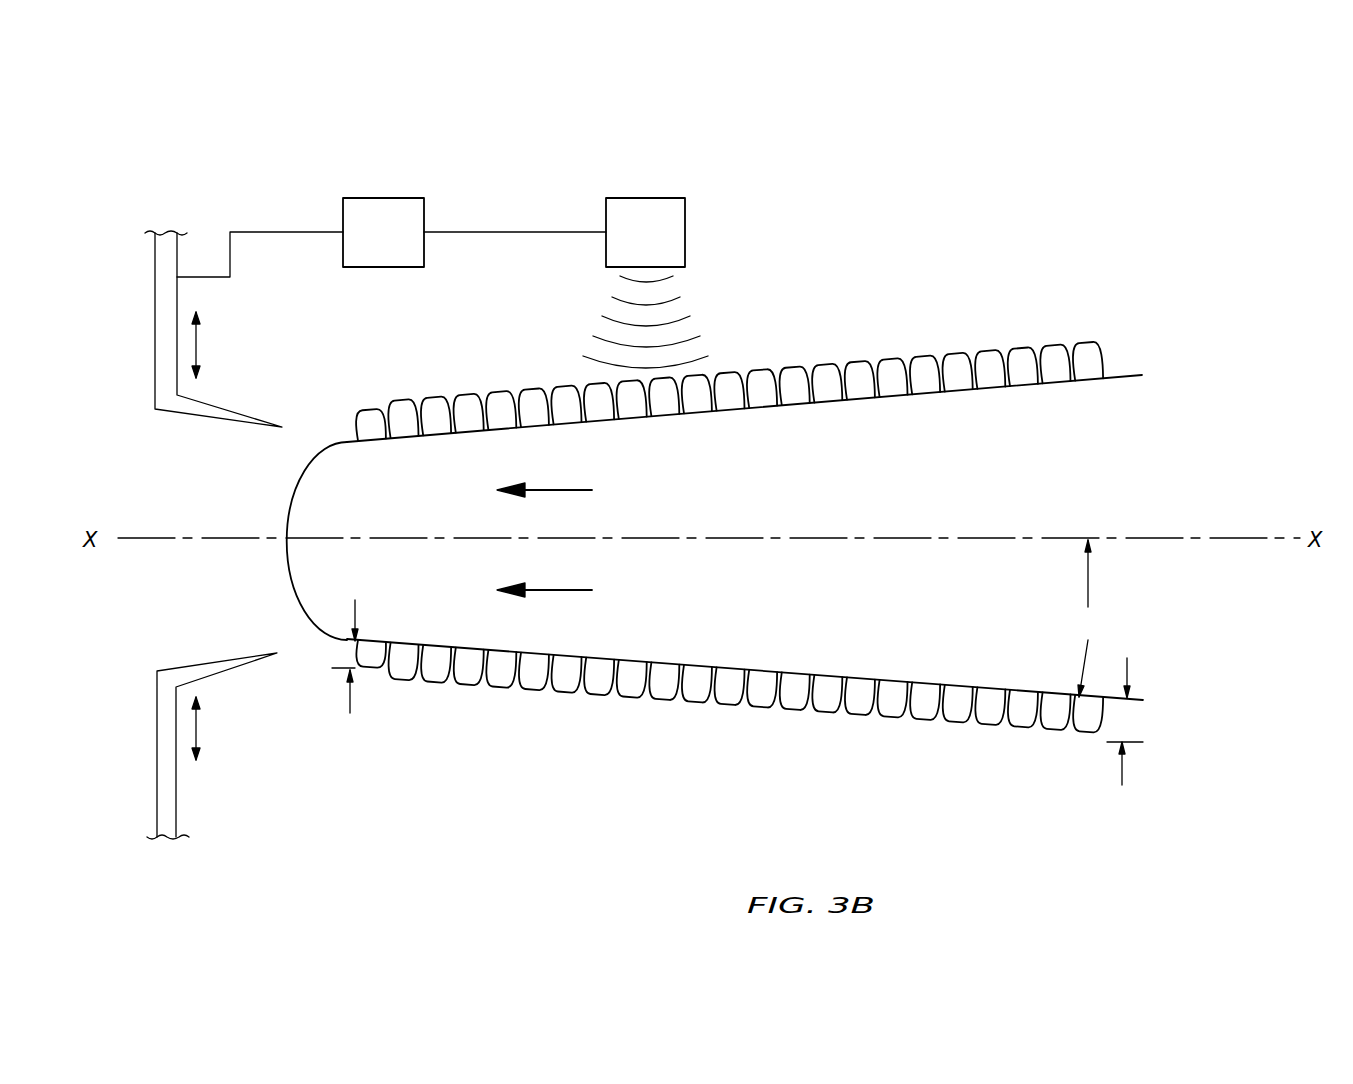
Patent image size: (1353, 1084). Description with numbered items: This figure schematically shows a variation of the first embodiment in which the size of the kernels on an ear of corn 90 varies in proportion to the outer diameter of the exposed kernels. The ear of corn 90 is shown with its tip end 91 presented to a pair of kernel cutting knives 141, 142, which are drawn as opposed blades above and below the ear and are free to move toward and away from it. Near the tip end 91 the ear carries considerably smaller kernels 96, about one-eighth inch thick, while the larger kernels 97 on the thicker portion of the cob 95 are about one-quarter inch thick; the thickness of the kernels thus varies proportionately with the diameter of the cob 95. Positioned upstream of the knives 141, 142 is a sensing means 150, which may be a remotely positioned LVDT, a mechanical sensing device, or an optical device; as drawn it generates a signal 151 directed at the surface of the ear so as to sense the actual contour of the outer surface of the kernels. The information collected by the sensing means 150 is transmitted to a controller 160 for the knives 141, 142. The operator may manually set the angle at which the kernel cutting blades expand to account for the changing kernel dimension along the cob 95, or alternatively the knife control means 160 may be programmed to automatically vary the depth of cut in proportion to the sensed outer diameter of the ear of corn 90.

The ear of corn 90 is at (972, 307).
The tip end 91 is at (297, 492).
The cob 95 is at (755, 618).
The kernels 96 is at (430, 682).
The kernels 97 is at (1090, 740).
The kernel cutting knife 141 is at (227, 407).
The kernel cutting knife 142 is at (220, 673).
The sensing means 150 is at (663, 197).
The signal 151 is at (677, 298).
The controller 160 is at (400, 197).